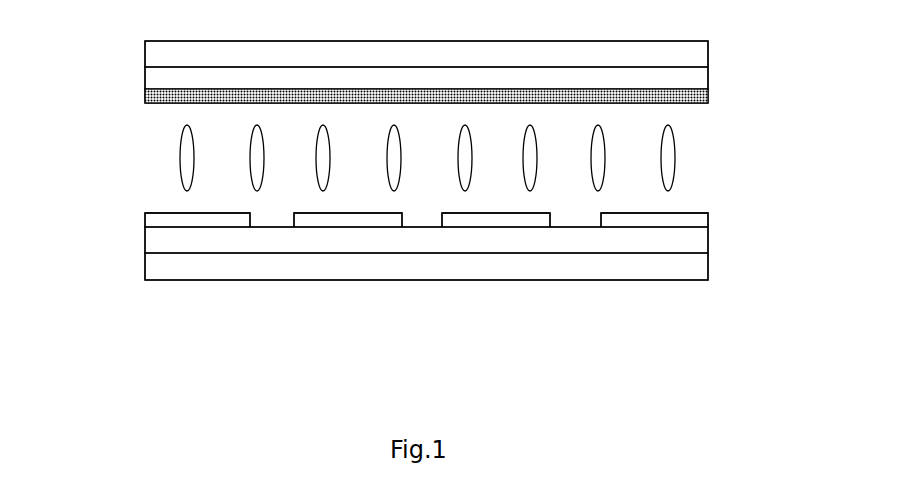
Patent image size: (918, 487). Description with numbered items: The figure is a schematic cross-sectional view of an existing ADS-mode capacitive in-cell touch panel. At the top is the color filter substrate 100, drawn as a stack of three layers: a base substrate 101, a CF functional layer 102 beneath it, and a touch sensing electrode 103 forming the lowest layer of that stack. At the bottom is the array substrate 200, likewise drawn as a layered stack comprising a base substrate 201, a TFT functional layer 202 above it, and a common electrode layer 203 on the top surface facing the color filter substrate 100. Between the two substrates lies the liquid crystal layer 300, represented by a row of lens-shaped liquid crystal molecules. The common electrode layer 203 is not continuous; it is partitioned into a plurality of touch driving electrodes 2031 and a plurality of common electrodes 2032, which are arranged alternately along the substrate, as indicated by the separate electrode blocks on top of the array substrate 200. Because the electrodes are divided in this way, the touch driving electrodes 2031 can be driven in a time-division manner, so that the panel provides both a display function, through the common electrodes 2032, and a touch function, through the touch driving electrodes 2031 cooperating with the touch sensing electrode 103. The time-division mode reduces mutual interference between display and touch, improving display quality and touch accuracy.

The color filter substrate 100 is at (125, 68).
The base substrate 101 is at (708, 50).
The CF functional layer 102 is at (708, 73).
The touch sensing electrode 103 is at (708, 96).
The liquid crystal layer 300 is at (150, 157).
The array substrate 200 is at (127, 249).
The base substrate 201 is at (708, 265).
The TFT functional layer 202 is at (708, 238).
The common electrode layer 203 is at (722, 211).
The touch driving electrodes 2031 is at (498, 221).
The common electrodes 2032 is at (350, 221).